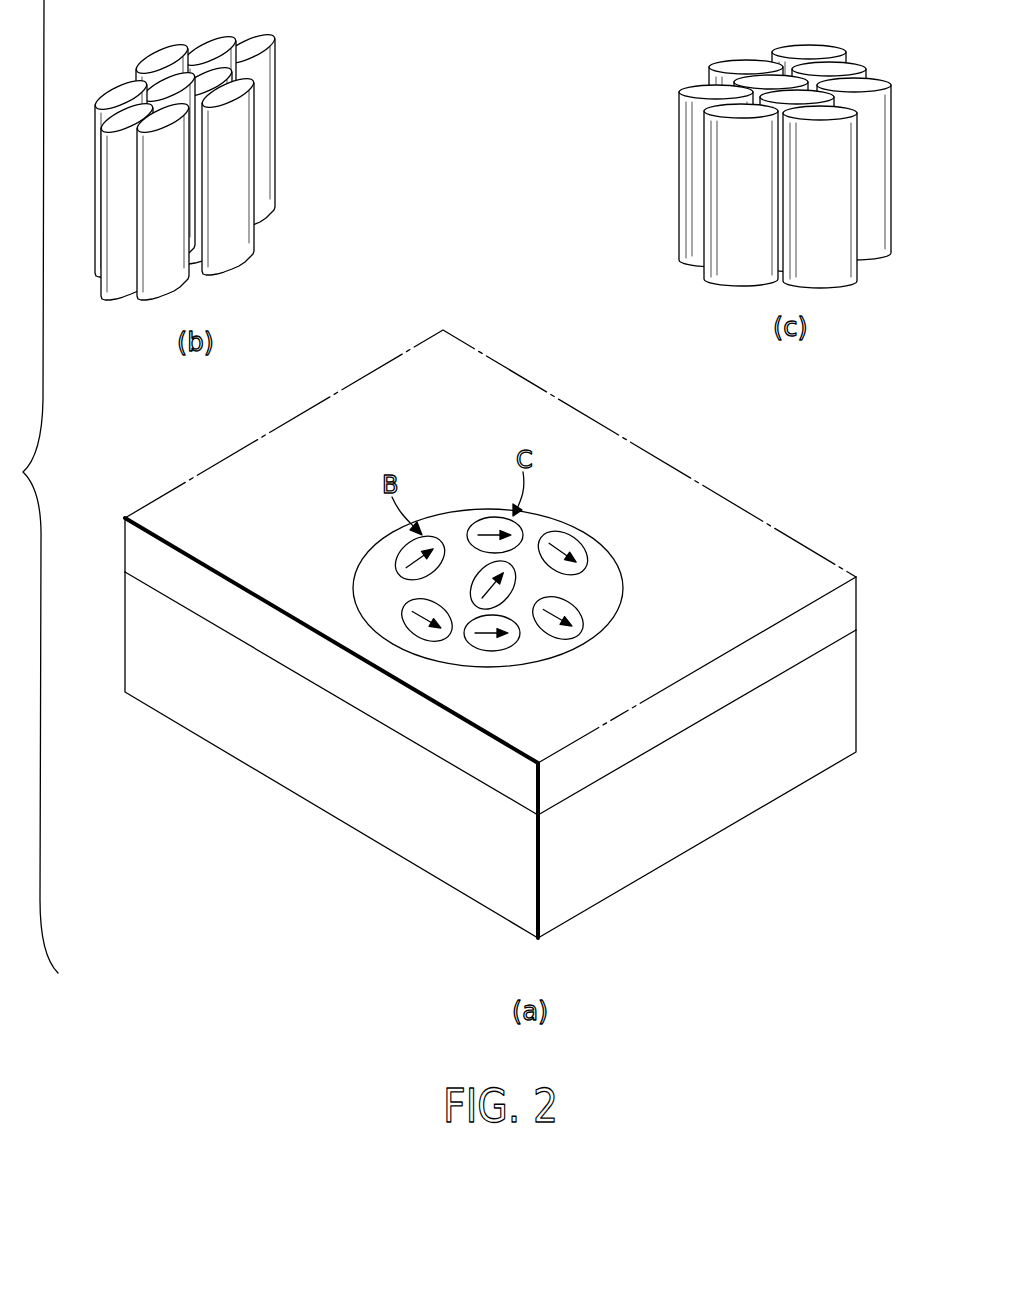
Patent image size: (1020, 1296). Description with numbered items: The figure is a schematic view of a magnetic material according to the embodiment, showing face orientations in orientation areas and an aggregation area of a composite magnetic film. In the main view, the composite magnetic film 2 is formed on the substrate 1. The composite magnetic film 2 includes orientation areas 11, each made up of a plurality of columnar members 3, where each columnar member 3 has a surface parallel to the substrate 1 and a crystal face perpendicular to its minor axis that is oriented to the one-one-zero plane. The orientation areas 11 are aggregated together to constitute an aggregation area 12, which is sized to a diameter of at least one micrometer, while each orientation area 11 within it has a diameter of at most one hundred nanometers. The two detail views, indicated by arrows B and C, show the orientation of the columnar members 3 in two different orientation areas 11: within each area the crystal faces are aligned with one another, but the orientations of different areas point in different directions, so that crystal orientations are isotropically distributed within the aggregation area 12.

The substrate 1 is at (848, 707).
The composite magnetic film 2 is at (866, 615).
The columnar members 3 is at (148, 250).
The orientation areas 11 is at (395, 568).
The aggregation area 12 is at (623, 580).